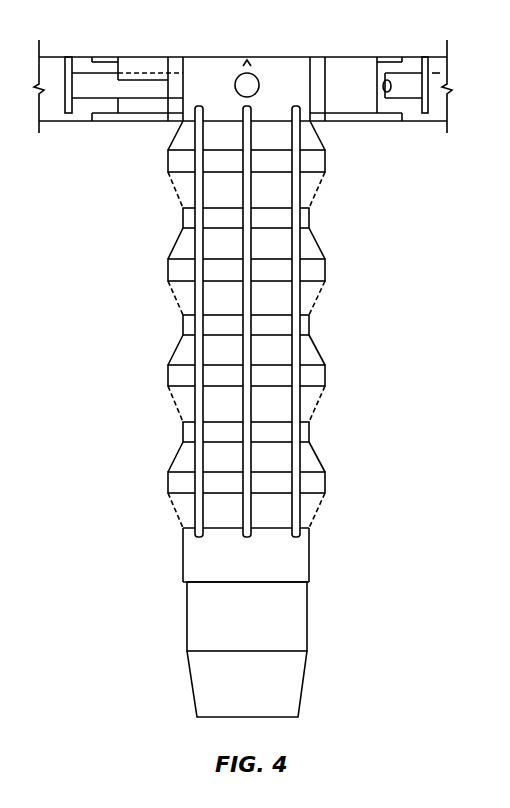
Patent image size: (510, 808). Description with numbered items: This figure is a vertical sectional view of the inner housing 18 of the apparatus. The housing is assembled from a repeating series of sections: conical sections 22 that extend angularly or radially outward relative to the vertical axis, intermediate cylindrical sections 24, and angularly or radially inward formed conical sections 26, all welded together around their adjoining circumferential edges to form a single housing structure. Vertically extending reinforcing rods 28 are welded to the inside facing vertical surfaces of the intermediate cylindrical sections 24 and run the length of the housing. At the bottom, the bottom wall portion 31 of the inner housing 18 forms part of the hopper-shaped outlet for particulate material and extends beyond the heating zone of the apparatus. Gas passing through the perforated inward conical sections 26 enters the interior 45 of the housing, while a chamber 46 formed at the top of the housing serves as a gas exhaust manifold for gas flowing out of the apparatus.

The inner housing 18 is at (245, 322).
The conical sections 22 is at (173, 250).
The intermediate cylindrical sections 24 is at (175, 373).
The inward formed conical sections 26 is at (178, 413).
The reinforcing rods 28 is at (196, 505).
The bottom wall portion 31 is at (310, 617).
The interior 45 is at (285, 303).
The chamber 46 is at (287, 75).